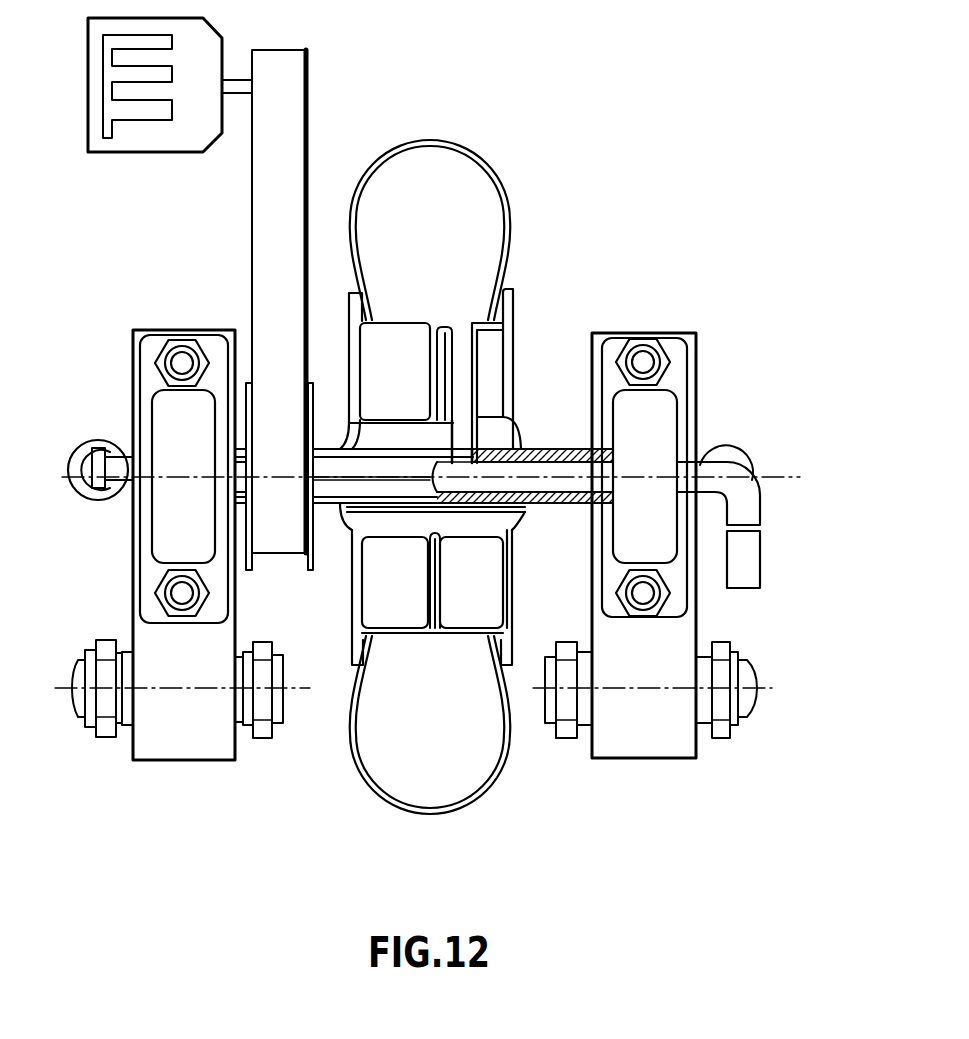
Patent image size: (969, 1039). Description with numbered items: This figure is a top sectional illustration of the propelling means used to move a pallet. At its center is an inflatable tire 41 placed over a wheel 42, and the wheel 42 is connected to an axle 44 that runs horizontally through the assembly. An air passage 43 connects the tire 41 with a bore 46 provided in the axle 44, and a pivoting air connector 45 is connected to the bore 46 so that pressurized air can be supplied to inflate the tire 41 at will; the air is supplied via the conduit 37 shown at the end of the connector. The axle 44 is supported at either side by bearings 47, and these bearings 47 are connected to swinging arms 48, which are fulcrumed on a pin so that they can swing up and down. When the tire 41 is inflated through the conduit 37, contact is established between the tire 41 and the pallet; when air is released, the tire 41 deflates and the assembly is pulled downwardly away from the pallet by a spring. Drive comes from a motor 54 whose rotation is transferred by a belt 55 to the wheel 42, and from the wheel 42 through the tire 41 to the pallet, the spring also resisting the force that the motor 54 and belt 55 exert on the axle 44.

The conduit 37 is at (745, 570).
The tire 41 is at (507, 208).
The wheel 42 is at (513, 318).
The air passage 43 is at (465, 328).
The axle 44 is at (540, 449).
The pivoting air connector 45 is at (745, 502).
The bore 46 is at (557, 483).
The bearings 47 is at (167, 523).
The swinging arms 48 is at (657, 738).
The motor 54 is at (103, 83).
The belt 55 is at (278, 226).